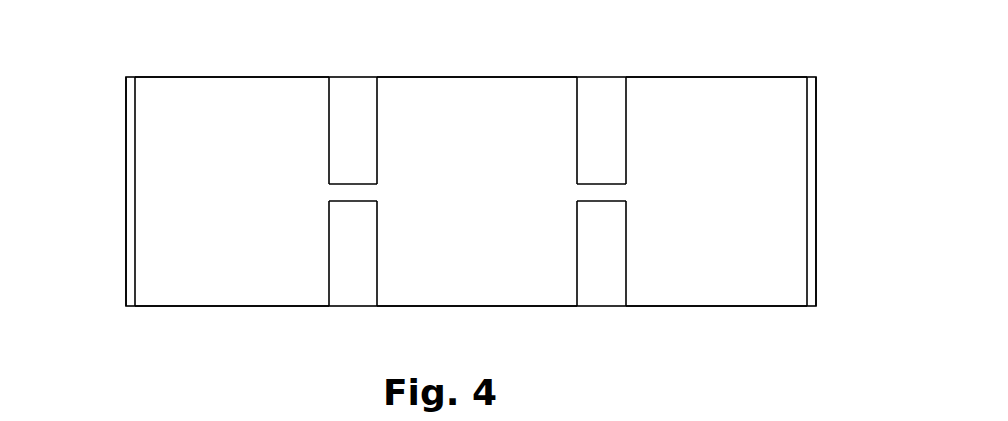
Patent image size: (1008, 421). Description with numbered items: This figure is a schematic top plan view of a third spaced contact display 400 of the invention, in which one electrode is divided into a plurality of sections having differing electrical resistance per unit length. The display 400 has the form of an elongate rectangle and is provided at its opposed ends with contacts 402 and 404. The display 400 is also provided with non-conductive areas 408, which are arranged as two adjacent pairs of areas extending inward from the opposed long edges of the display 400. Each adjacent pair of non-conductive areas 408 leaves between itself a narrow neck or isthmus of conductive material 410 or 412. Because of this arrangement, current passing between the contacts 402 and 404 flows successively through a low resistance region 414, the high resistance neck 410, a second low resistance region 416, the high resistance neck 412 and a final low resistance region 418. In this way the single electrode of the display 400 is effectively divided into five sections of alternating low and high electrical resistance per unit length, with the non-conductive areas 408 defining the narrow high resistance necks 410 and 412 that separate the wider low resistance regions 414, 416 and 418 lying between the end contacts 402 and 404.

The display 400 is at (182, 66).
The contact 402 is at (133, 190).
The contact 404 is at (811, 213).
The non-conductive areas 408 is at (362, 95).
The neck of conductive material 410 is at (353, 192).
The neck of conductive material 412 is at (600, 190).
The low resistance region 414 is at (232, 191).
The low resistance region 416 is at (477, 191).
The low resistance region 418 is at (716, 191).